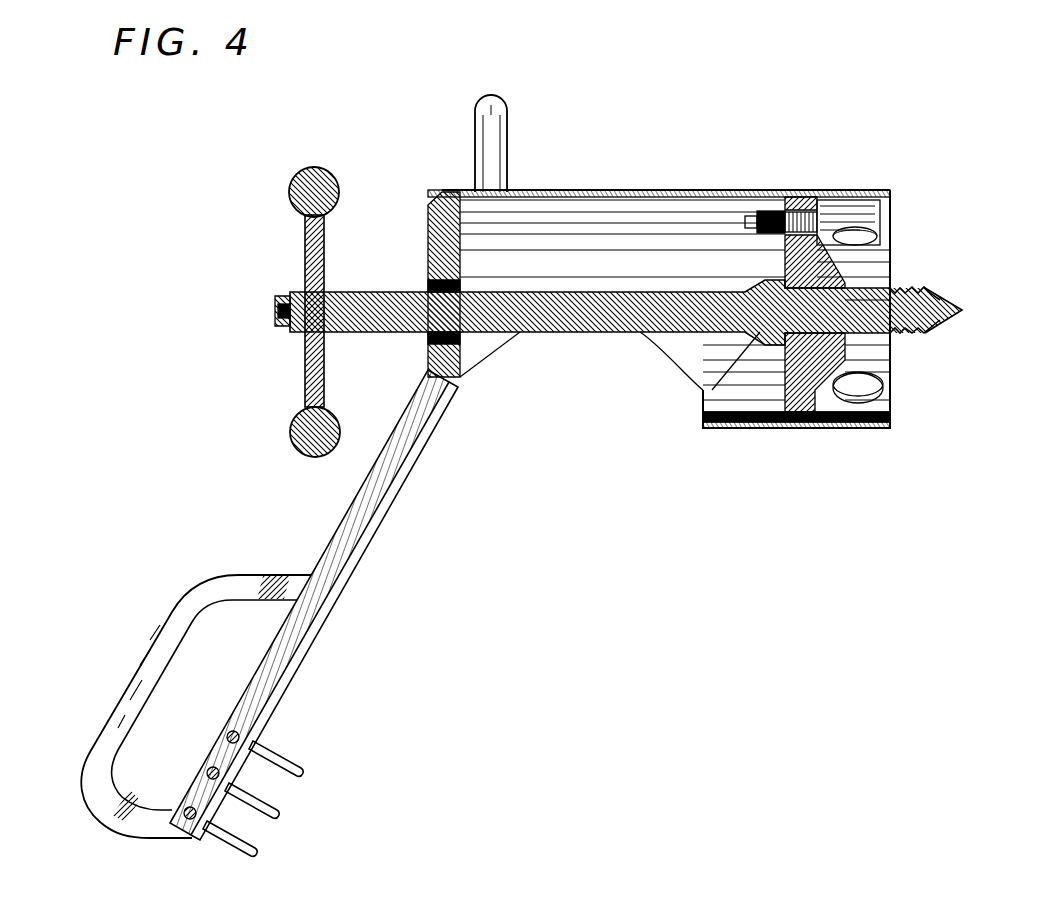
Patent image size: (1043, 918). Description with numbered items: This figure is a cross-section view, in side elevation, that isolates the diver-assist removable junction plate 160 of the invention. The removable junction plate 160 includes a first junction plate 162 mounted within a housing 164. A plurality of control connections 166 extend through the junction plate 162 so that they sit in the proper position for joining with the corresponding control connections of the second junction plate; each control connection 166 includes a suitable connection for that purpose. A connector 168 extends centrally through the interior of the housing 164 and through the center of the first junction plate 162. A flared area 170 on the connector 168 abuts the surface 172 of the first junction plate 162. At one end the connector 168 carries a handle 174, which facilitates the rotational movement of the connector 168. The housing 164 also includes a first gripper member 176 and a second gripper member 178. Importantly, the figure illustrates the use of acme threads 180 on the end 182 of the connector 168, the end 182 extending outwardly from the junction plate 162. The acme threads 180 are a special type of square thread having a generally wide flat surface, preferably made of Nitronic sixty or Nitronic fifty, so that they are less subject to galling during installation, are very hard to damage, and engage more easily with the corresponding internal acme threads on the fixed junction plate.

The removable junction plate 160 is at (805, 170).
The first junction plate 162 is at (755, 430).
The housing 164 is at (580, 190).
The control connections 166 is at (890, 210).
The connector 168 is at (575, 317).
The flared area 170 is at (710, 390).
The surface 172 is at (783, 258).
The handle 174 is at (305, 258).
The first gripper member 176 is at (380, 515).
The second gripper member 178 is at (507, 142).
The acme threads 180 is at (920, 285).
The end 182 is at (945, 312).